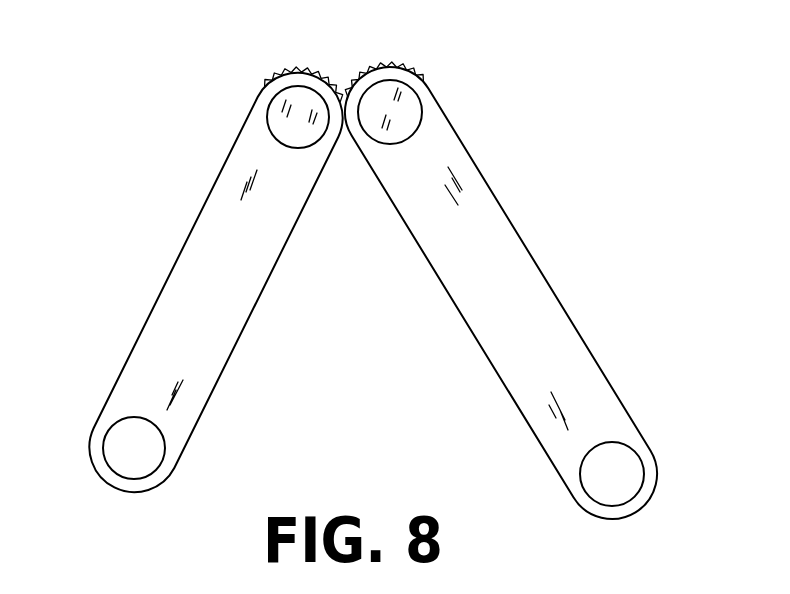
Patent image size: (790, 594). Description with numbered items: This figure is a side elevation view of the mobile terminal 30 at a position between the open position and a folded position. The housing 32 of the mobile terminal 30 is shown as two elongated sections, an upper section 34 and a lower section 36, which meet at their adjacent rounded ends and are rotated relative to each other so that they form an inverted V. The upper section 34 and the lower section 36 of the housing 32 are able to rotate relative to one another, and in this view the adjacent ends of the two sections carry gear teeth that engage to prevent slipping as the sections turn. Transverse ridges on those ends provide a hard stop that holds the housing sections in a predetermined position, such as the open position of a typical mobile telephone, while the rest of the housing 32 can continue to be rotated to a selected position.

The mobile terminal 30 is at (488, 107).
The housing 32 is at (536, 260).
The upper section 34 is at (128, 372).
The lower section 36 is at (569, 343).